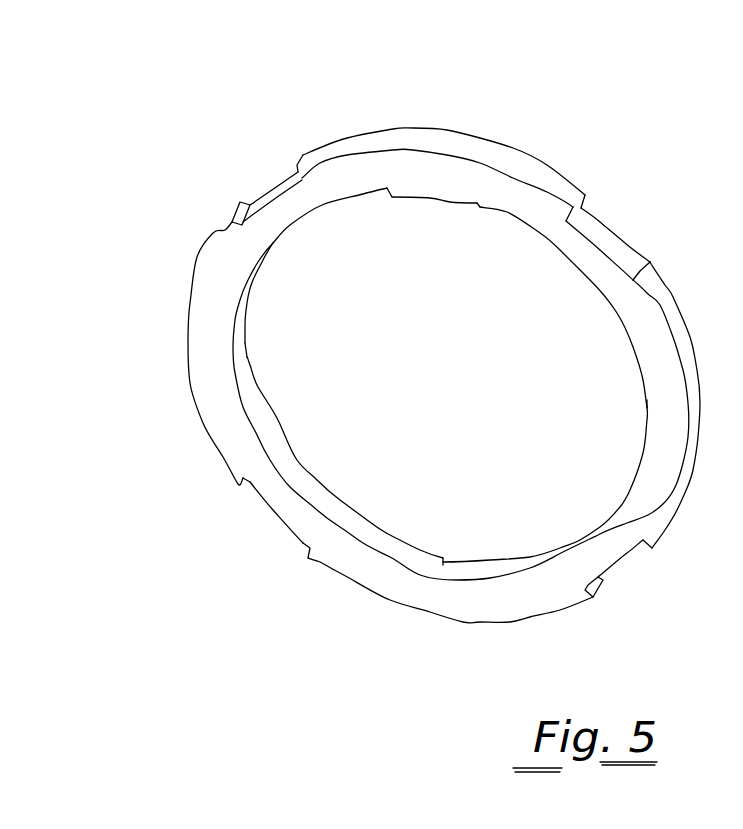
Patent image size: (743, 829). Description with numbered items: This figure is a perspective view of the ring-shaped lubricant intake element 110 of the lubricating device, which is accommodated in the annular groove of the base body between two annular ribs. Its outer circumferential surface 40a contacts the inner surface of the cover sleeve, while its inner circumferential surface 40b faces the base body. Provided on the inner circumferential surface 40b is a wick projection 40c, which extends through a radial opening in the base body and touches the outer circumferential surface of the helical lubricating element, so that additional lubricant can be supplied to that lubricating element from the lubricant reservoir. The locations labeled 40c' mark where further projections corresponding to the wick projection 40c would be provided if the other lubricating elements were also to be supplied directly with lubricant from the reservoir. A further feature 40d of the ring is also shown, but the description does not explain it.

The ring 110 is at (331, 105).
The outer circumferential surface 40a is at (517, 165).
The inner circumferential surface 40b is at (271, 241).
The wick projection 40c is at (433, 239).
The locations for additional wick projections 40c' is at (446, 447).
The flange segment 40d is at (614, 243).